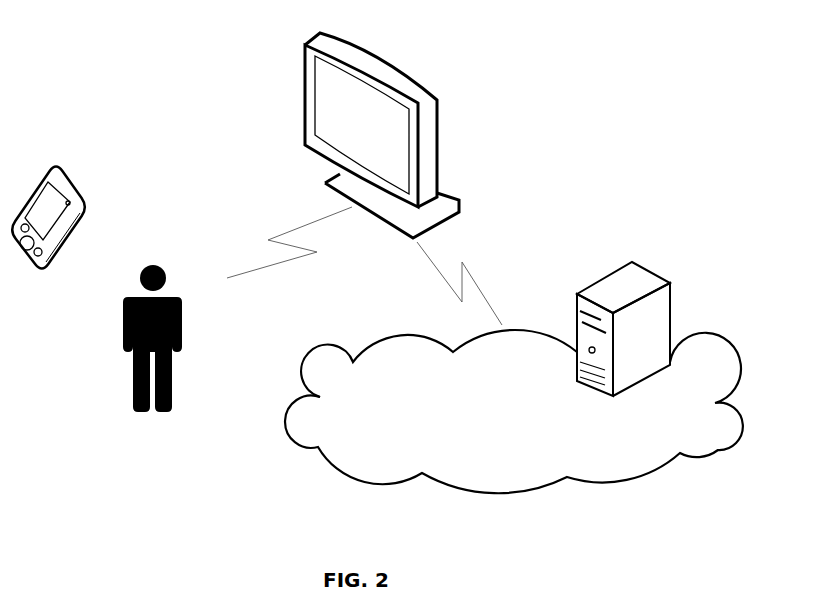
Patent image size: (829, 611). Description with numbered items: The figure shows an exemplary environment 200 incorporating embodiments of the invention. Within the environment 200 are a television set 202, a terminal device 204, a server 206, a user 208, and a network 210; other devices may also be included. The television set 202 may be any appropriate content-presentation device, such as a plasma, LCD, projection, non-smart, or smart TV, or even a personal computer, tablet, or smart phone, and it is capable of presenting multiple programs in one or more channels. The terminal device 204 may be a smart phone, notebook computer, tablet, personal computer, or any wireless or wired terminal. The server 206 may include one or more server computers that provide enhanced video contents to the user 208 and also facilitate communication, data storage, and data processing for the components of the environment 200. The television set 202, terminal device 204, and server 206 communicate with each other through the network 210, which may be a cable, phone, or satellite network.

The environment 200 is at (143, 89).
The television set 202 is at (430, 133).
The terminal device 204 is at (70, 245).
The server 206 is at (663, 328).
The user 208 is at (168, 398).
The network 210 is at (402, 437).